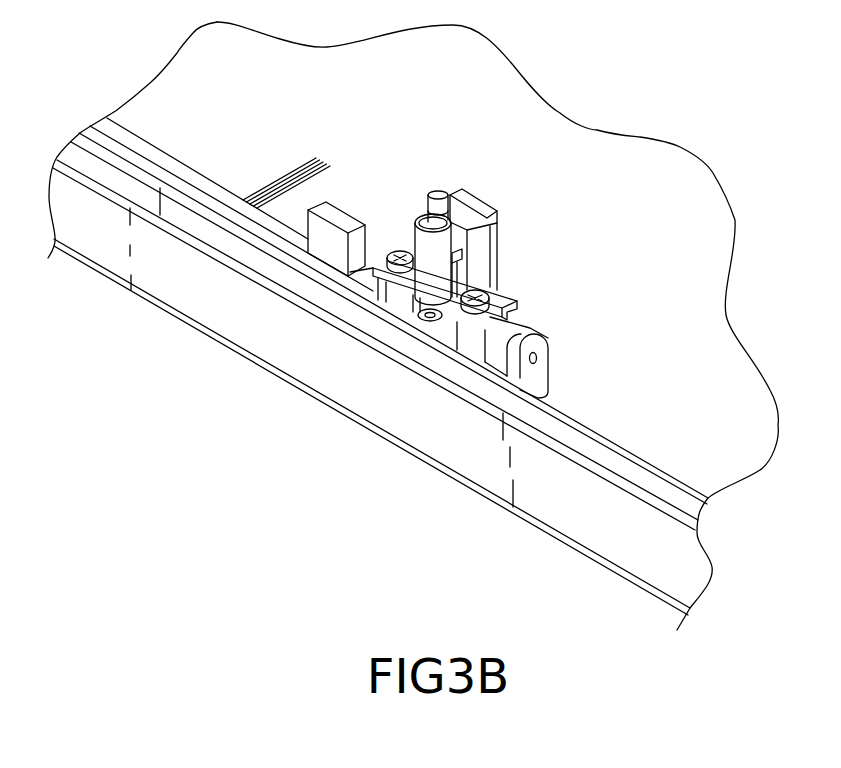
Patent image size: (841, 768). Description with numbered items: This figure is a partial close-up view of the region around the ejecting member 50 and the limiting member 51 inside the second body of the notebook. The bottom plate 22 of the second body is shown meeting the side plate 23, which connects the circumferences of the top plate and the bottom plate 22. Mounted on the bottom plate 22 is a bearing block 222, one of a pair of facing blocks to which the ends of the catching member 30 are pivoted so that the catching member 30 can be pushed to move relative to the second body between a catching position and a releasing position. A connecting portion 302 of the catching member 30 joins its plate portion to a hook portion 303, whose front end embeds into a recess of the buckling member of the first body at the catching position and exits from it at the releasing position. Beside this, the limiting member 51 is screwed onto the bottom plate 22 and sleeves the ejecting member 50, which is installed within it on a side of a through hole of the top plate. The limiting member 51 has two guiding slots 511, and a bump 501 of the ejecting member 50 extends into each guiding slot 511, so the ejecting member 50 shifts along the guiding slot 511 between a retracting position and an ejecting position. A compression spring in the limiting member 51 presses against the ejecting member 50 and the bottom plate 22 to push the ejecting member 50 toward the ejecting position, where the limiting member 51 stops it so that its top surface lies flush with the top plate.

The bottom plate 22 is at (707, 425).
The side plate 23 is at (413, 413).
The bearing block 222 is at (524, 378).
The catching member 30 is at (210, 163).
The connecting portion 302 is at (155, 158).
The hook portion 303 is at (468, 198).
The ejecting member 50 is at (428, 178).
The limiting member 51 is at (402, 228).
The bump 501 is at (462, 258).
The guiding slot 511 is at (458, 281).